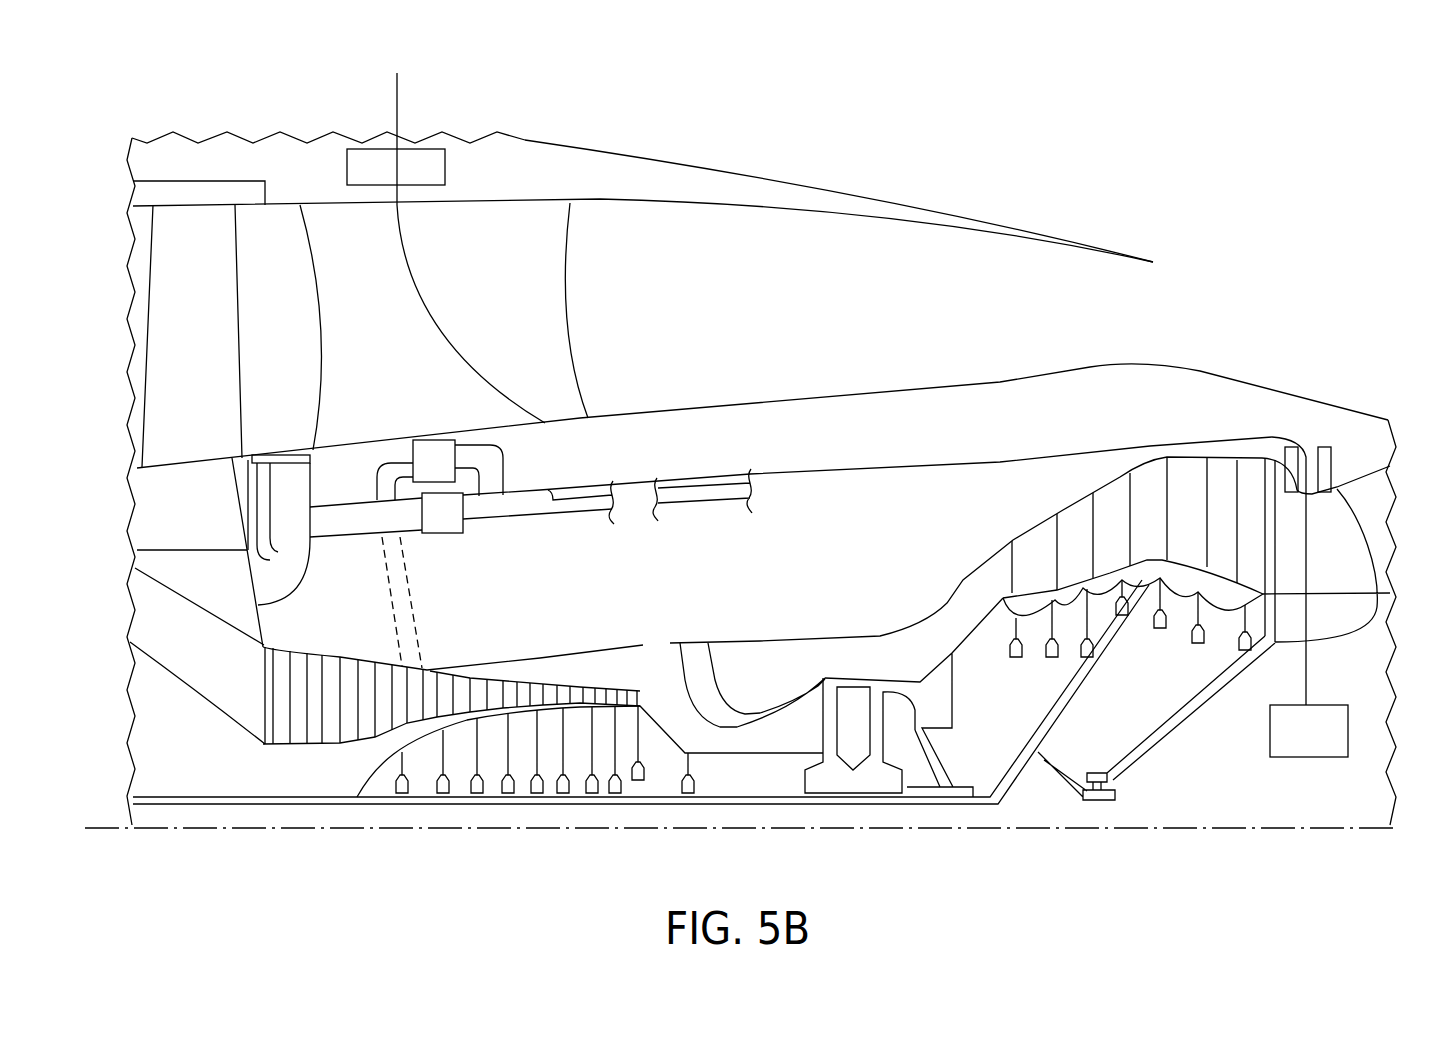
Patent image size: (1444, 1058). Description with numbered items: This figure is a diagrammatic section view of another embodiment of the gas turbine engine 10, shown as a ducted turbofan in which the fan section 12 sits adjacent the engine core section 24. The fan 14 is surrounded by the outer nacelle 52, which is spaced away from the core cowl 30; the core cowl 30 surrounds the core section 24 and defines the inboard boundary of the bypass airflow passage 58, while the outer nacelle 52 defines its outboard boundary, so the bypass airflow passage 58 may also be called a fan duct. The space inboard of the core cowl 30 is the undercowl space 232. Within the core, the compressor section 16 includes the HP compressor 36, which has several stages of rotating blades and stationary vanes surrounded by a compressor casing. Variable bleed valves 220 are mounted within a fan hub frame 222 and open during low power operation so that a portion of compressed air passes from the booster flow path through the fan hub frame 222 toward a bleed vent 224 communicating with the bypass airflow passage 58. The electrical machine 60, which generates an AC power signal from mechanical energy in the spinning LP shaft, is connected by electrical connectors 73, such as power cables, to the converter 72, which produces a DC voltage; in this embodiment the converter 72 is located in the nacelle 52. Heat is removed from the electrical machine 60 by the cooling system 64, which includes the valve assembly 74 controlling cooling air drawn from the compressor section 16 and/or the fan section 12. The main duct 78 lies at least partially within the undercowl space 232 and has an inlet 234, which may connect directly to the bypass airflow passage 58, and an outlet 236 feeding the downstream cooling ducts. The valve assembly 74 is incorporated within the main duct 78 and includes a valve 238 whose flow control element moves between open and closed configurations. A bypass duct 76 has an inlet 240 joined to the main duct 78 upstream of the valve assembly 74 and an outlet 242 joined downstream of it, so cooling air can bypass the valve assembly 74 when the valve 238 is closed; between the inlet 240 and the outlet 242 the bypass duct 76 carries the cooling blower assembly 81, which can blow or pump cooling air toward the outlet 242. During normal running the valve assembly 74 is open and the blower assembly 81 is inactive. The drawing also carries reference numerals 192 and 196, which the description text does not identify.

The gas turbine engine 10 is at (1195, 150).
The fan section 12 is at (257, 250).
The fan 14 is at (168, 283).
The compressor section 16 is at (245, 780).
The engine core section 24 is at (767, 357).
The core cowl 30 is at (1193, 373).
The HP compressor 36 is at (333, 737).
The outer nacelle 52 is at (790, 175).
The bypass airflow passage 58 is at (897, 258).
The electrical machine 60 is at (1302, 737).
The cooling system 64 is at (593, 458).
The converter 72 is at (403, 155).
The electrical connectors 73 is at (880, 477).
The valve assembly 74 is at (460, 522).
The bypass duct 76 is at (397, 462).
The main duct 78 is at (547, 505).
The cooling blower assembly 81 is at (433, 447).
The fan exit guide vane 192 is at (470, 257).
The aft end of core cowl 196 is at (1389, 443).
The variable bleed valves 220 is at (188, 545).
The fan hub frame 222 is at (143, 523).
The bleed vent 224 is at (272, 453).
The undercowl space 232 is at (957, 410).
The inlet 234 is at (307, 523).
The outlet 236 is at (750, 472).
The valve 238 is at (448, 522).
The inlet 240 is at (387, 495).
The outlet 242 is at (513, 488).